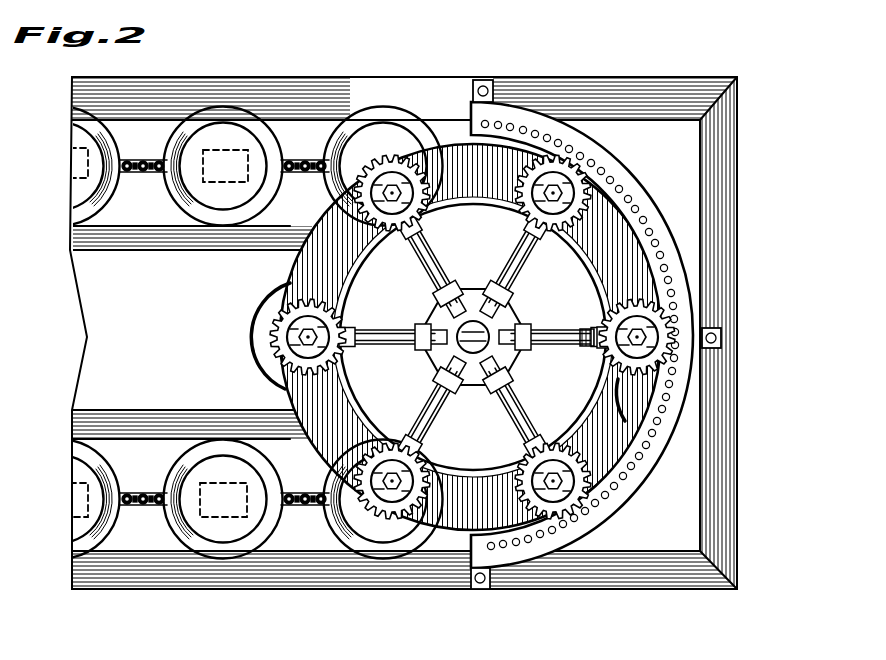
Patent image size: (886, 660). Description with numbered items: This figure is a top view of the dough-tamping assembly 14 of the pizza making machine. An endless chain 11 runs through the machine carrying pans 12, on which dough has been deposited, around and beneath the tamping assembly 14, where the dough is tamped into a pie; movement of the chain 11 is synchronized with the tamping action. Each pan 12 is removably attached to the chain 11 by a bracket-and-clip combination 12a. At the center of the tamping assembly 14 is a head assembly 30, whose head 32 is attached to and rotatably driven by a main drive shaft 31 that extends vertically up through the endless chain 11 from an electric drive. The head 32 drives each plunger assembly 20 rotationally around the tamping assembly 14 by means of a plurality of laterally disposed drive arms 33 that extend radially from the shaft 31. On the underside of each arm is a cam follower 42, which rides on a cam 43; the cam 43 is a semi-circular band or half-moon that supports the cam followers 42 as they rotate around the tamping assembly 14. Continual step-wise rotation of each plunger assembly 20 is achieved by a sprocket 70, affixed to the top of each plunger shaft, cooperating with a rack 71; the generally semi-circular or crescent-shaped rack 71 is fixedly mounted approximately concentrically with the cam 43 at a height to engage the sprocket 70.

The endless belt or chain 11 is at (150, 203).
The pan 12 is at (245, 110).
The bracket-and-clip combination 12a is at (90, 148).
The tamping assembly 14 is at (740, 256).
The plunger assembly 20 is at (258, 361).
The head assembly 30 is at (519, 372).
The main drive shaft 31 is at (473, 354).
The head 32 is at (495, 324).
The drive arm 33 is at (450, 258).
The cam follower 42 is at (590, 329).
The cam 43 is at (575, 262).
The sprocket 70 is at (262, 348).
The rack 71 is at (594, 162).